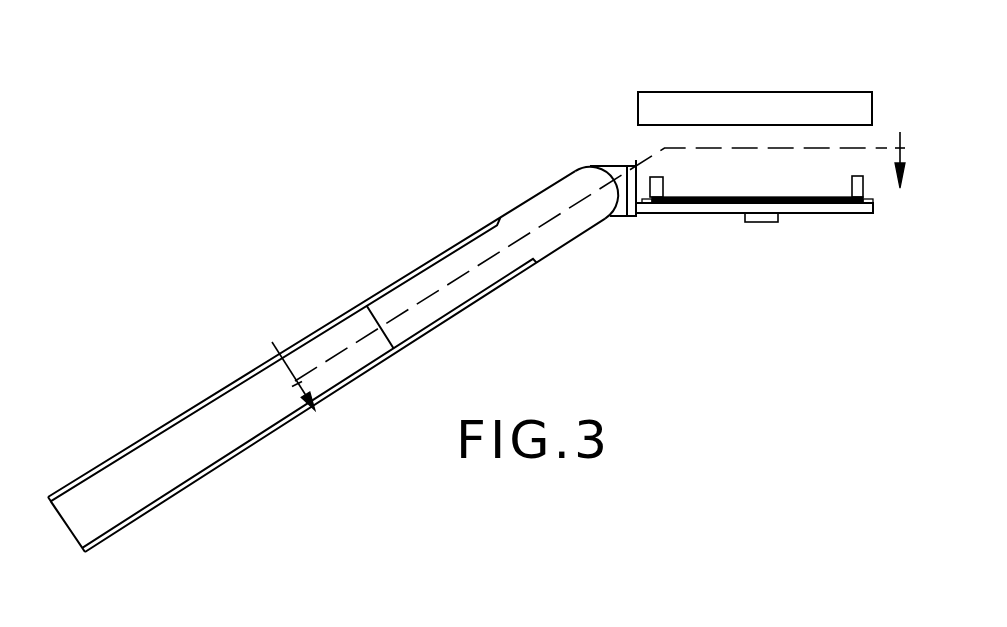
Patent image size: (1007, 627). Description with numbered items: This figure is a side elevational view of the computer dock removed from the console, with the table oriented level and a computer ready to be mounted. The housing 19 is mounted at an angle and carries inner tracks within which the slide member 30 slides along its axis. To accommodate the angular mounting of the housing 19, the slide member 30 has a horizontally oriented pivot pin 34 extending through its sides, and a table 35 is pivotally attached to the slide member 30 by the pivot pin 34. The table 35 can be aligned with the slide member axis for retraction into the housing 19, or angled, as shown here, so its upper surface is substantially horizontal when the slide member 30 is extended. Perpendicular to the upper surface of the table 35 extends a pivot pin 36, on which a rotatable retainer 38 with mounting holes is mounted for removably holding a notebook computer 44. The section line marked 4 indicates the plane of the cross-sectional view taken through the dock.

The housing 19 is at (228, 383).
The slide member 30 is at (532, 198).
The pivot pin 34 is at (582, 165).
The table 35 is at (818, 198).
The pivot pin 36 is at (755, 222).
The rotatable retainer 38 is at (802, 213).
The notebook computer 44 is at (720, 92).
The section line 4- 4 is at (580, 256).